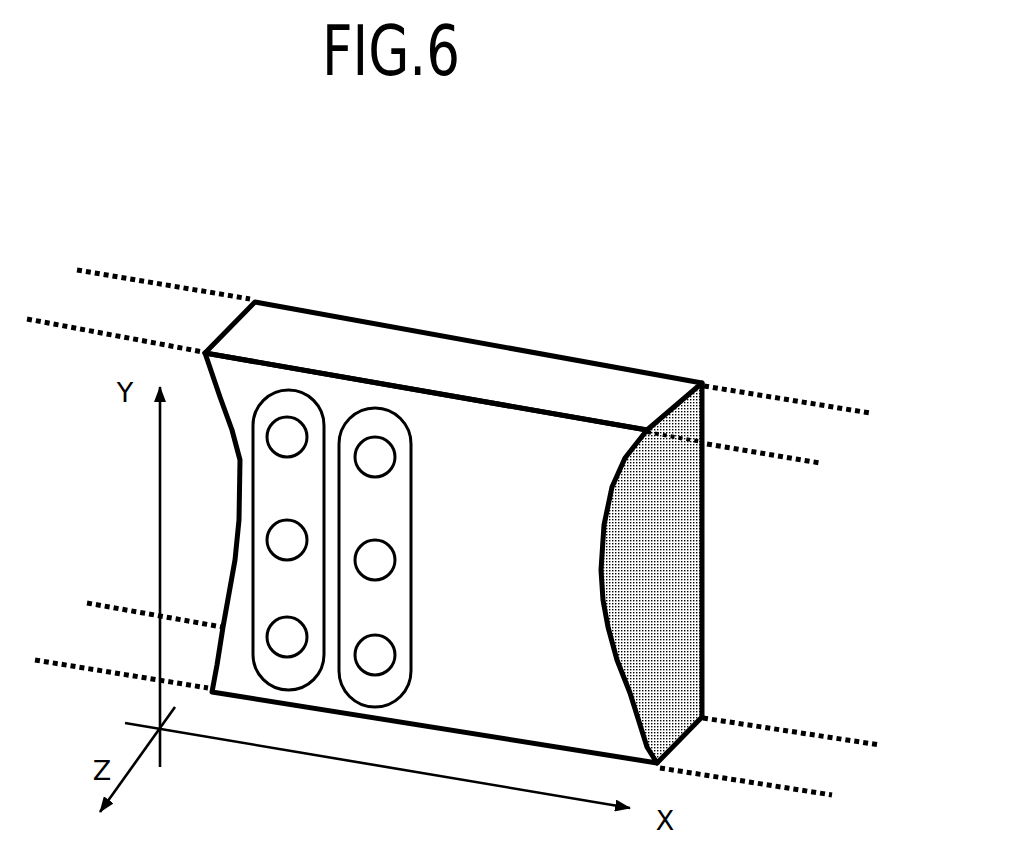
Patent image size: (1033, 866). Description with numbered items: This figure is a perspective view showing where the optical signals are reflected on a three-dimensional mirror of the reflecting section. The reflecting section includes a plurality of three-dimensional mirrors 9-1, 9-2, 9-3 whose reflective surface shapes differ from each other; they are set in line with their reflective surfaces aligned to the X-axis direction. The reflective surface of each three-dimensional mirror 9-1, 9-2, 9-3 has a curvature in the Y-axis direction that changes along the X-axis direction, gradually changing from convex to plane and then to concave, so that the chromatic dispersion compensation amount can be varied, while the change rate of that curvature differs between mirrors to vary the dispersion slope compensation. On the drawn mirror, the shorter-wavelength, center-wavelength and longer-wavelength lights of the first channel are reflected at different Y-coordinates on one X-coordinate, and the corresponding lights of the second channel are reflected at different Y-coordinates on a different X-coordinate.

The three-dimensional mirror 9-1 is at (125, 300).
The three-dimensional mirror 9-2 is at (465, 358).
The three-dimensional mirror 9-3 is at (810, 423).